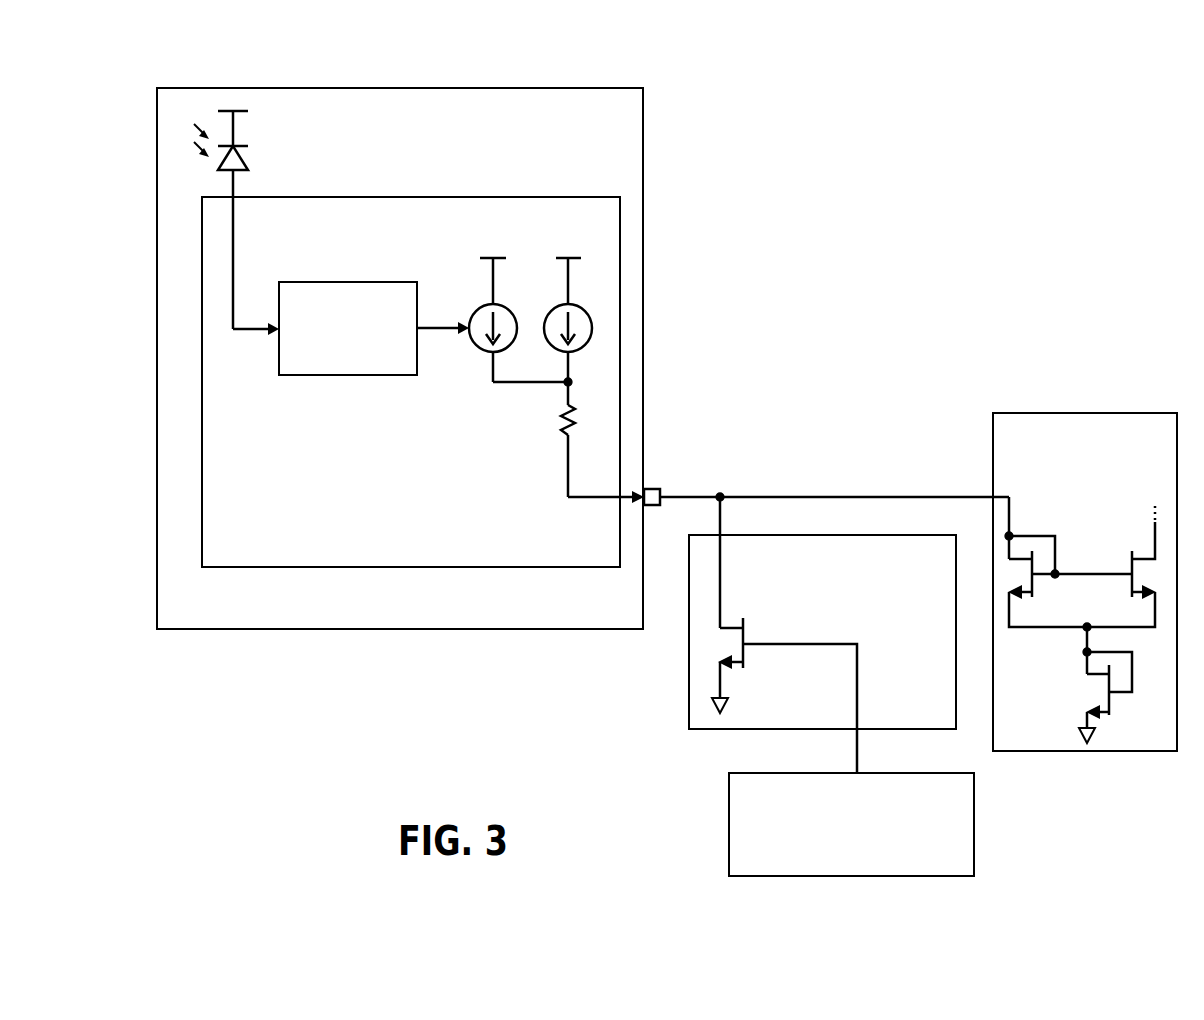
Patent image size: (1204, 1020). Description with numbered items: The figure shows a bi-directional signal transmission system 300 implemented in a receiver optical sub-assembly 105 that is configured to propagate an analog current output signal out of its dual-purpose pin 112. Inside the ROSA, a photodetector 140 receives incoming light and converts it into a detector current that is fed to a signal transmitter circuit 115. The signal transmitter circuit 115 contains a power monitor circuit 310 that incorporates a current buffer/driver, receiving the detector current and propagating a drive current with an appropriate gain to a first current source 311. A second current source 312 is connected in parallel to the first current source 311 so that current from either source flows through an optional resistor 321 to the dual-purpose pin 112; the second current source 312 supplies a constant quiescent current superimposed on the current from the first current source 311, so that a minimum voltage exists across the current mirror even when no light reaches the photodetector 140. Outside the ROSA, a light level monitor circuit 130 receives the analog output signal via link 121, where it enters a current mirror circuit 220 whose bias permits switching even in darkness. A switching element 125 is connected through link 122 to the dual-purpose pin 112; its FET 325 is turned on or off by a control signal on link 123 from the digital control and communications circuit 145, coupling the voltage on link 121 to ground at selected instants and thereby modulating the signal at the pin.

The bi-directional signal transmission system 300 is at (1110, 140).
The receiver optical sub-assembly 105 is at (622, 120).
The signal transmitter circuit 115 is at (608, 239).
The photodetector 140 is at (278, 170).
The power monitor circuit 310 is at (404, 308).
The first current source 311 is at (477, 309).
The second current source 312 is at (577, 310).
The resistor 321 is at (560, 421).
The dual-purpose pin P4 112 is at (664, 495).
The link 121 is at (877, 496).
The link 122 is at (720, 521).
The switching element 125 is at (940, 561).
The FET 325 is at (745, 653).
The link 123 is at (857, 745).
The digital control and communications circuit 145 is at (970, 798).
The light level monitor circuit 130 is at (1172, 436).
The current mirror circuit 220 is at (1034, 660).